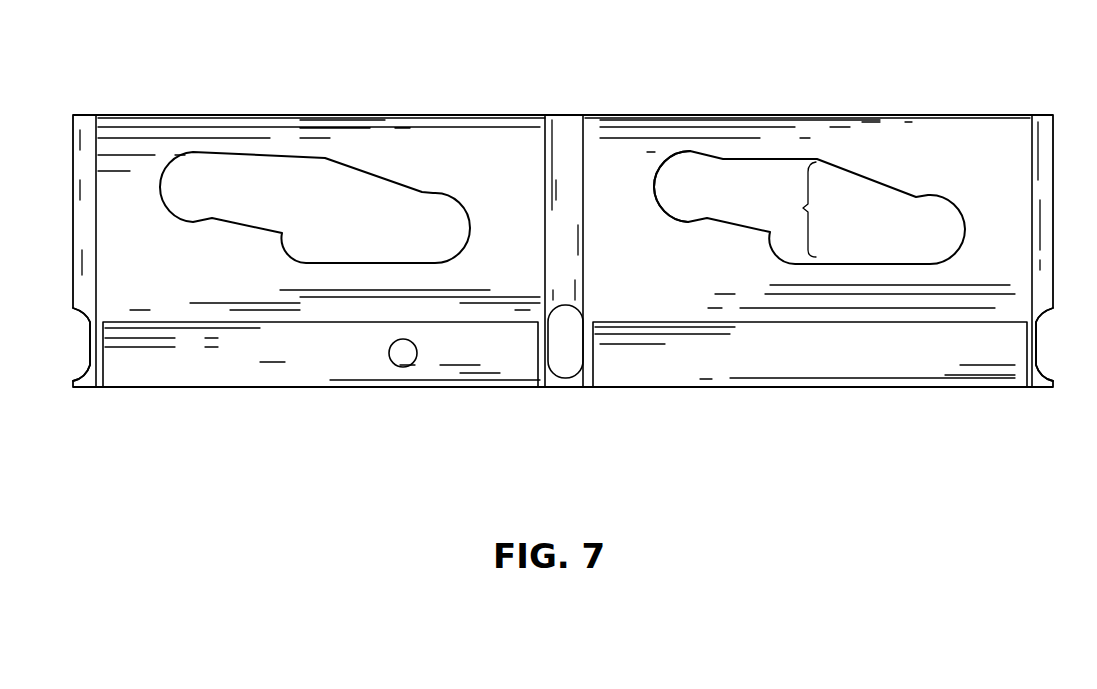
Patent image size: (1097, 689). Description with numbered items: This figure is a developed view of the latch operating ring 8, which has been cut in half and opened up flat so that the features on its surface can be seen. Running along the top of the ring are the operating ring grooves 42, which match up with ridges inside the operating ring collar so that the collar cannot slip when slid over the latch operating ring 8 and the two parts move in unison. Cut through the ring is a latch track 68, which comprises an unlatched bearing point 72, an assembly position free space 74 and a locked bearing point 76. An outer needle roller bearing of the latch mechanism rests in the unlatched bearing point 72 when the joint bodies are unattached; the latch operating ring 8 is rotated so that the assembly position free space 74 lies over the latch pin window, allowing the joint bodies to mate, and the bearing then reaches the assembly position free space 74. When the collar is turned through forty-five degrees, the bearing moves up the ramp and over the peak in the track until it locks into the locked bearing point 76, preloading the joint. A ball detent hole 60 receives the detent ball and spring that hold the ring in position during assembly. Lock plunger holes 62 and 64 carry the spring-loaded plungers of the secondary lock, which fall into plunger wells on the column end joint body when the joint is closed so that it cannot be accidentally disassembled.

The latch operating ring 8 is at (421, 114).
The operating ring grooves 42 is at (562, 115).
The ball detent hole 60 is at (402, 358).
The lock plunger hole 62 is at (563, 360).
The lock plunger hole 64 is at (87, 368).
The latch track 68 is at (323, 222).
The unlatched bearing point 72 is at (940, 198).
The assembly position free space 74 is at (806, 207).
The locked bearing point 76 is at (676, 208).